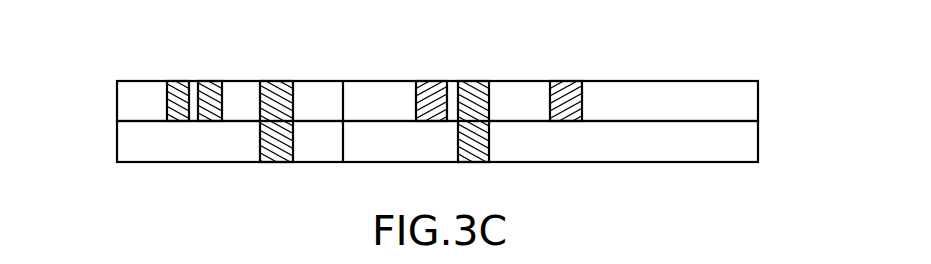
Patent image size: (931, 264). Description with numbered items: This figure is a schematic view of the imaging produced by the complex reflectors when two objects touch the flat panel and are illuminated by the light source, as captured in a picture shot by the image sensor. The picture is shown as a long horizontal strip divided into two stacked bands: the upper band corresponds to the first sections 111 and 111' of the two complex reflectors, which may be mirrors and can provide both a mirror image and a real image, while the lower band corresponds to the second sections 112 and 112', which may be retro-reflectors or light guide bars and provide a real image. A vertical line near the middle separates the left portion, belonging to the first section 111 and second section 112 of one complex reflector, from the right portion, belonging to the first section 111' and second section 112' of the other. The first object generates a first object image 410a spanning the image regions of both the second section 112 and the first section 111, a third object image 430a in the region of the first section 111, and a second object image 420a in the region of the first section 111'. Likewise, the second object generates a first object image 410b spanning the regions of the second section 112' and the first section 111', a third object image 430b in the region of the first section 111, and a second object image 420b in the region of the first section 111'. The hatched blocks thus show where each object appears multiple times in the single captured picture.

The first section 111 is at (407, 101).
The second section 112 is at (407, 141).
The first section 111' is at (584, 92).
The second section 112' is at (584, 150).
The first object image 410a is at (277, 95).
The first object image 410b is at (473, 95).
The second object image 420a is at (432, 93).
The second object image 420b is at (566, 93).
The third object image 430a is at (210, 92).
The third object image 430b is at (181, 89).